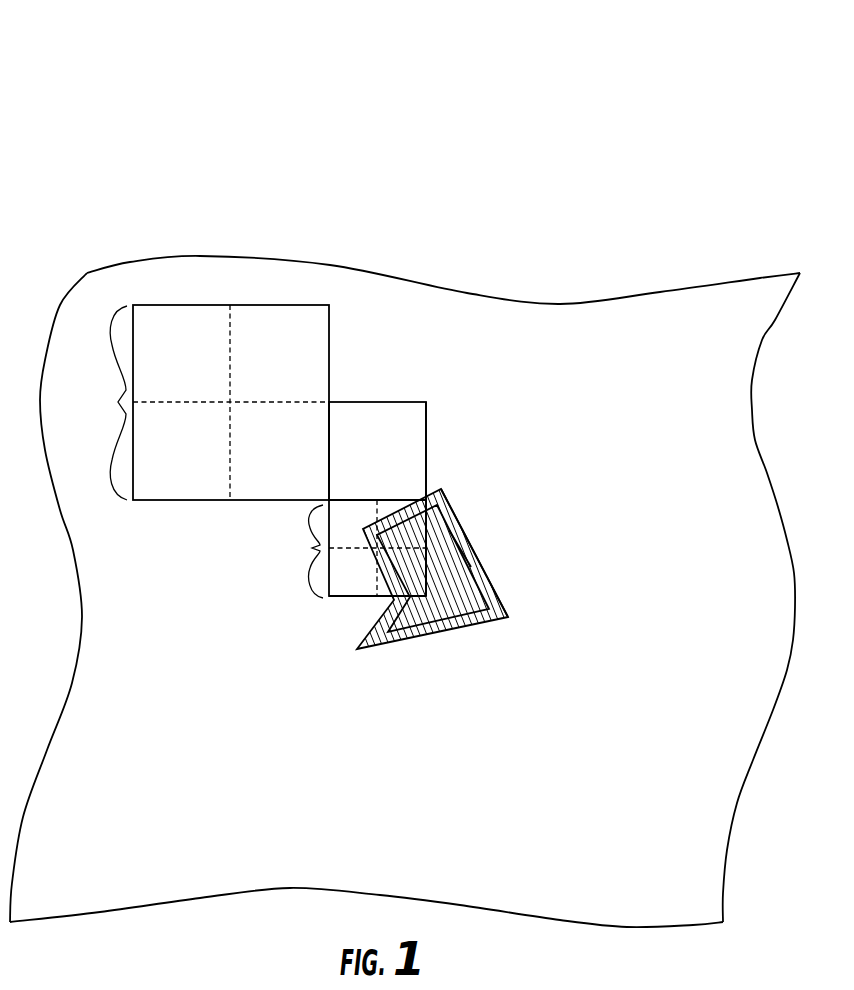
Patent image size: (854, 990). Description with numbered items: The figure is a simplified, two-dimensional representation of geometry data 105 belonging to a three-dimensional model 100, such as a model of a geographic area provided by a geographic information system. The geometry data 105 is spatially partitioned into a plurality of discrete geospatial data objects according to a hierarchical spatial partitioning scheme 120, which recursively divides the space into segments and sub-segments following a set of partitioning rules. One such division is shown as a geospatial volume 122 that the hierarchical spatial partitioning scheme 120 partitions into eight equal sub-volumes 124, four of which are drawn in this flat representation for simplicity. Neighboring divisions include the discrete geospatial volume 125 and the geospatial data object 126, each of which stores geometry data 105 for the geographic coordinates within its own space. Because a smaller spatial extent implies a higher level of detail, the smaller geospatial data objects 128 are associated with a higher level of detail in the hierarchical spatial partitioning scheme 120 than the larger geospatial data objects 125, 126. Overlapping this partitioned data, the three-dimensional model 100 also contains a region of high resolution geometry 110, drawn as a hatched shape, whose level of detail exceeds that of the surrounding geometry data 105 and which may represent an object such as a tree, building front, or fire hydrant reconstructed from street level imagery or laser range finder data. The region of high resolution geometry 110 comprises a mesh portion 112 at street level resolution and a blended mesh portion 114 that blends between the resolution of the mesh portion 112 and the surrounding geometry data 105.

The three-dimensional model 100 is at (692, 145).
The geometry data 105 is at (596, 320).
The region of high resolution geometry 110 is at (486, 622).
The mesh portion 112 is at (470, 570).
The blended mesh portion 114 is at (499, 594).
The hierarchical spatial partitioning scheme 120 is at (167, 305).
The geospatial volume 122 is at (330, 396).
The sub-volumes 124 is at (102, 403).
The discrete geospatial volume 125 is at (426, 456).
The geospatial data object 126 is at (341, 597).
The geospatial data objects 128 is at (346, 549).